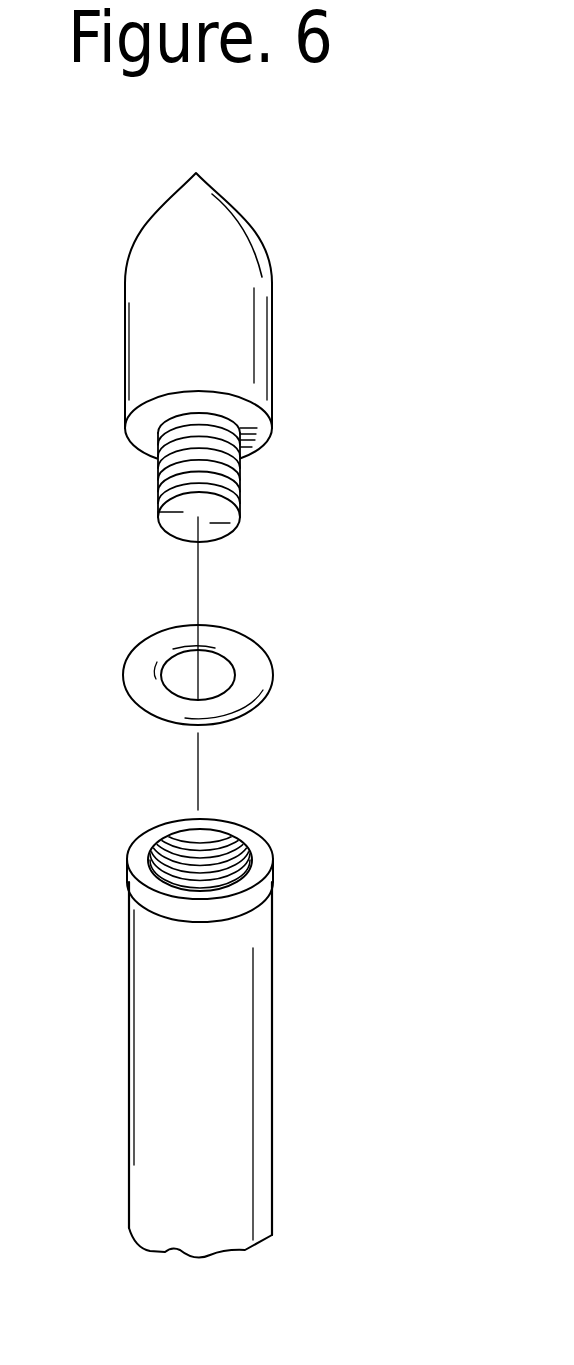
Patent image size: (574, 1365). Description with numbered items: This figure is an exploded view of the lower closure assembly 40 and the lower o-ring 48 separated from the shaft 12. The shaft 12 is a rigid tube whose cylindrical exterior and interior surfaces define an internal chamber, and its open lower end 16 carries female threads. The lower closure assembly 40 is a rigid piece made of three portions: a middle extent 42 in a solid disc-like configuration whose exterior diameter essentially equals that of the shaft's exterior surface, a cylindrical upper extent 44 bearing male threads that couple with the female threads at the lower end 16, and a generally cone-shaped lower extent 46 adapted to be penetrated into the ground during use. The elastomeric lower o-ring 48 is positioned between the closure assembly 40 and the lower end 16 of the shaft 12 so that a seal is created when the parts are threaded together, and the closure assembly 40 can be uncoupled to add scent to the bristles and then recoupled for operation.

The shaft 12 is at (266, 1005).
The open lower end 16 is at (247, 862).
The lower closure assembly 40 is at (265, 322).
The middle extent 42 is at (263, 380).
The upper extent 44 is at (240, 471).
The lower extent 46 is at (217, 187).
The lower o-ring 48 is at (250, 652).